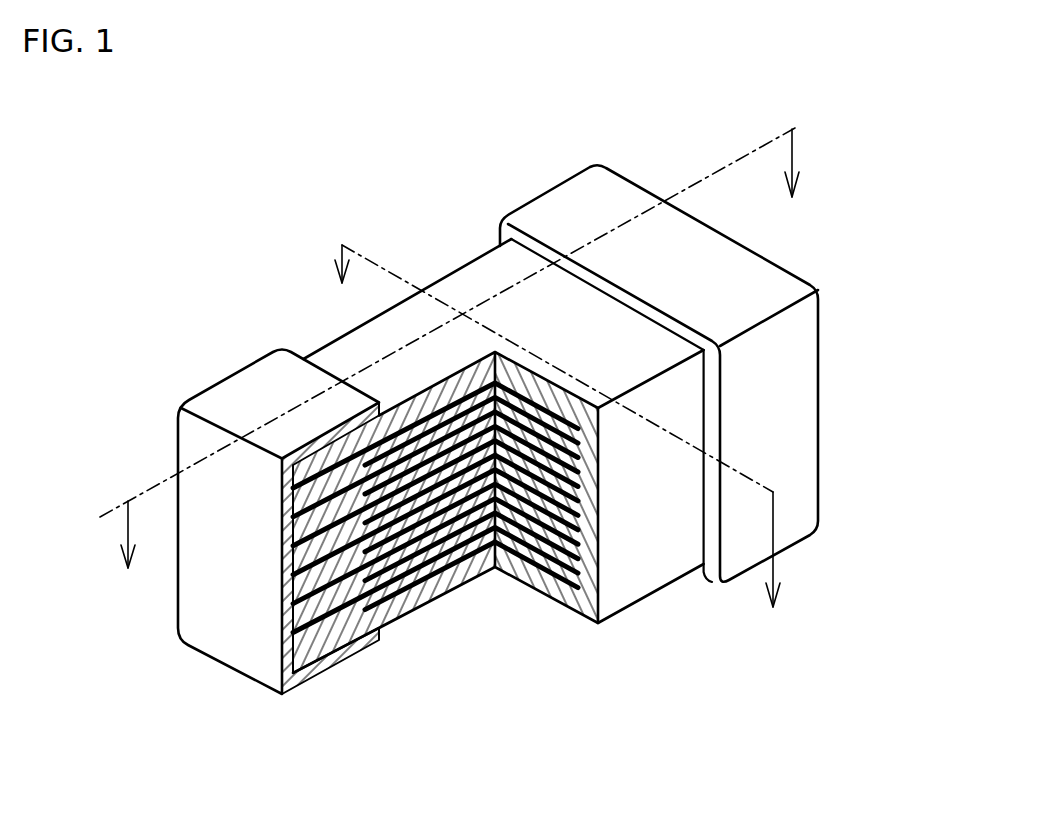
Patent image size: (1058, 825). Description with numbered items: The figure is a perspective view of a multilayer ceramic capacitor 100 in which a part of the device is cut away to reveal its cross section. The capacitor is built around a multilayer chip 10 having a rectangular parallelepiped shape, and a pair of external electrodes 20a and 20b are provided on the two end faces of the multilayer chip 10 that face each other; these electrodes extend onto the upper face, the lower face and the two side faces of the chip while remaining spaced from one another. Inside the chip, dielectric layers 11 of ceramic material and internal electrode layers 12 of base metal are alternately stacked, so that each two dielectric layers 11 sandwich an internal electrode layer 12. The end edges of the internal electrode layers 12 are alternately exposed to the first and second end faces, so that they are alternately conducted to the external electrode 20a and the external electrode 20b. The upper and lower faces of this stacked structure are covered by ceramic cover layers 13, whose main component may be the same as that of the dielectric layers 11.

The multilayer ceramic capacitor 100 is at (873, 97).
The multilayer chip 10 is at (462, 479).
The dielectric layer 11 is at (437, 580).
The internal electrode layer 12 is at (480, 573).
The cover layer 13 is at (463, 288).
The external electrode 20a is at (205, 390).
The external electrode 20b is at (555, 212).